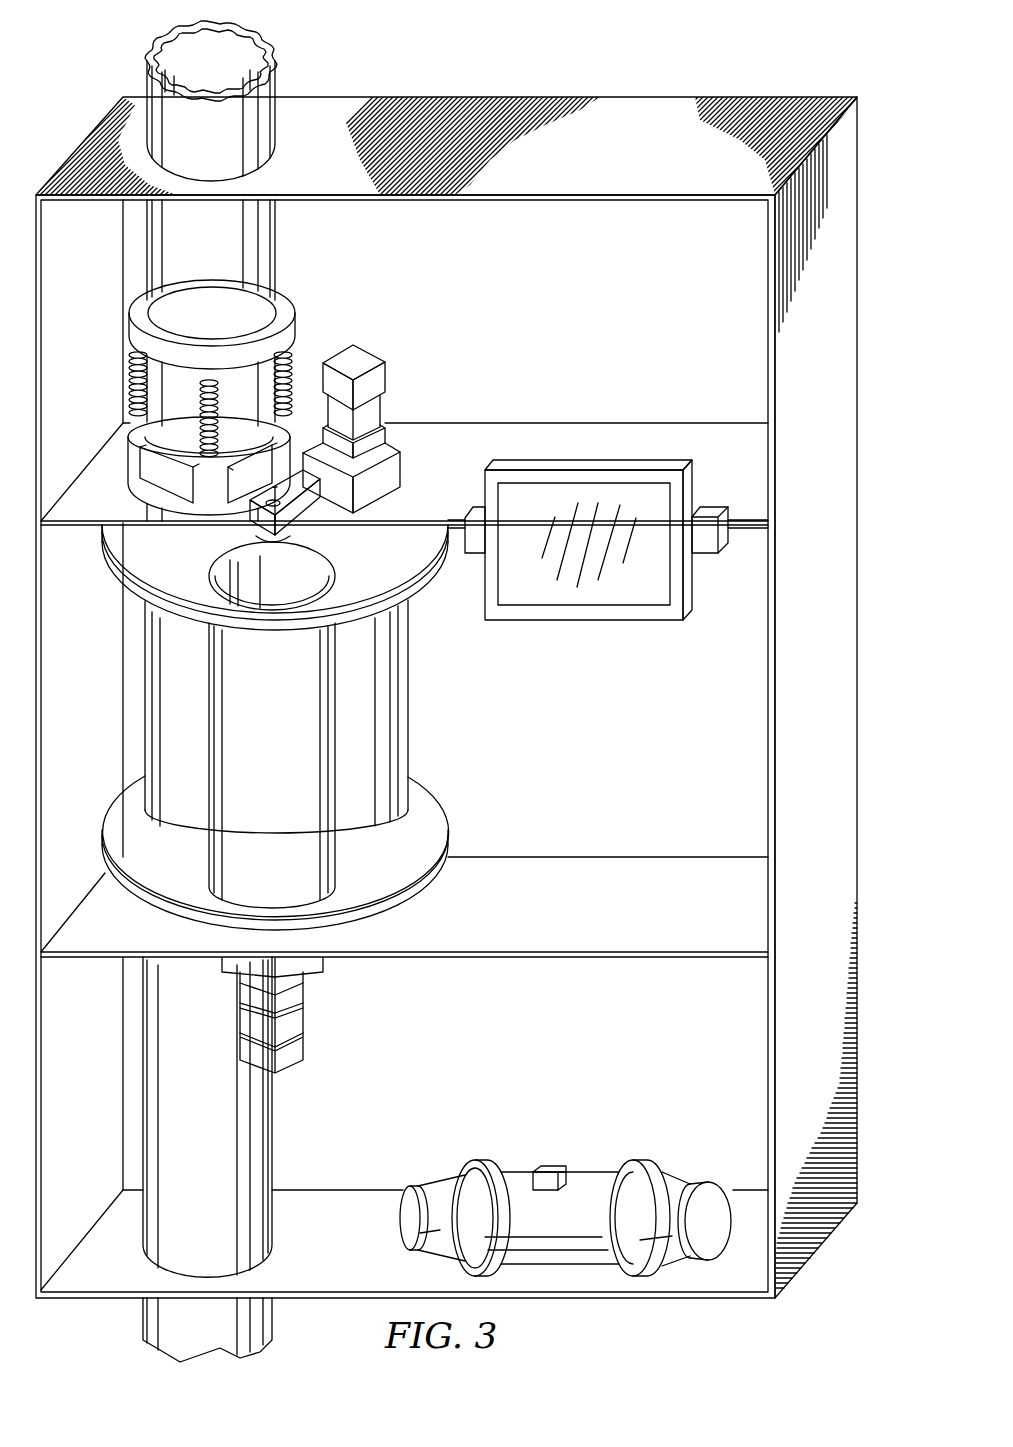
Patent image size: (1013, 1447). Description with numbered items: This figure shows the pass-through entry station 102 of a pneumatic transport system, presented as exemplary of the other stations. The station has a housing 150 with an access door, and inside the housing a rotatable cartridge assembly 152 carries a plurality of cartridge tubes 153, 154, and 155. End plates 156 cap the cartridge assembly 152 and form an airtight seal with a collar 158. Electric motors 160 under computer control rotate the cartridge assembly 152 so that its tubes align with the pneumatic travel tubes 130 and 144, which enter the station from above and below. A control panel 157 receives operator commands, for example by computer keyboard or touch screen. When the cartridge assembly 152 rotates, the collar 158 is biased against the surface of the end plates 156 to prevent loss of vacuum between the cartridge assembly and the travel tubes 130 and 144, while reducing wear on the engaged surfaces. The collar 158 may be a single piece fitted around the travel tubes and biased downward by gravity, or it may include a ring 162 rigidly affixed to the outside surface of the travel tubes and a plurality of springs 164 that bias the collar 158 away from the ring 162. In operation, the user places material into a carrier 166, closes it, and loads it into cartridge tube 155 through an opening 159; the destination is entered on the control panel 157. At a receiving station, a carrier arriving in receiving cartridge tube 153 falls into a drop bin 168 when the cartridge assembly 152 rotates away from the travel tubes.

The pass-through entry station 102 is at (88, 66).
The pneumatic travel tube 130 is at (276, 248).
The pneumatic travel tube 144 is at (272, 1150).
The housing 150 is at (597, 95).
The rotatable cartridge assembly 152 is at (470, 788).
The cartridge tube 153 is at (408, 710).
The cartridge tube 154 is at (145, 712).
The cartridge tube 155 is at (208, 840).
The end plates 156 is at (410, 600).
The control panel 157 is at (614, 620).
The collar 158 is at (128, 445).
The opening 159 is at (338, 562).
The electric motors 160 is at (387, 374).
The ring 162 is at (295, 330).
The springs 164 is at (128, 378).
The carrier 166 is at (582, 1175).
The drop bin 168 is at (318, 1272).